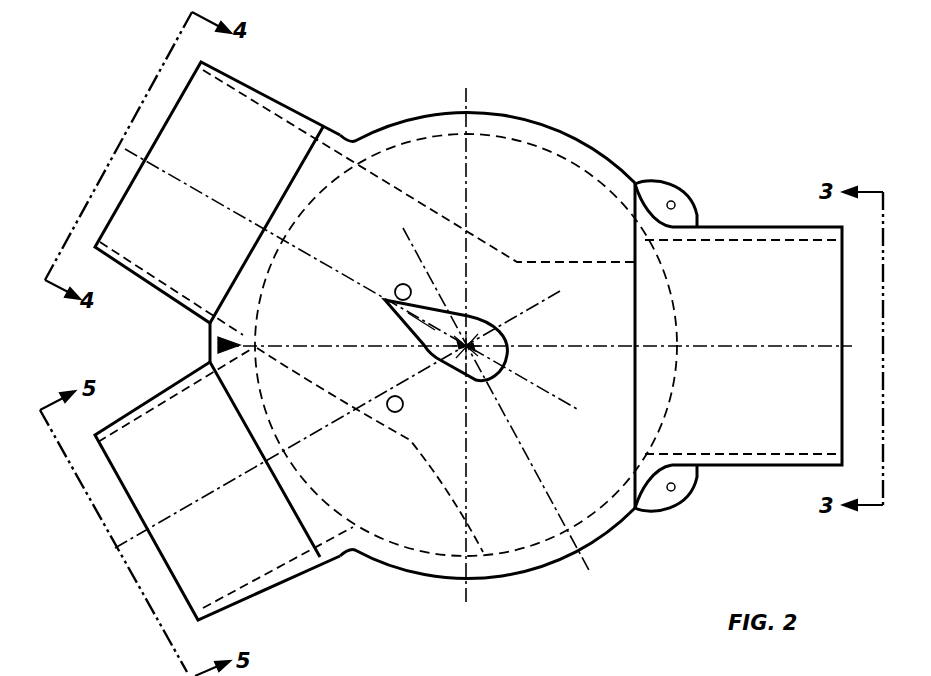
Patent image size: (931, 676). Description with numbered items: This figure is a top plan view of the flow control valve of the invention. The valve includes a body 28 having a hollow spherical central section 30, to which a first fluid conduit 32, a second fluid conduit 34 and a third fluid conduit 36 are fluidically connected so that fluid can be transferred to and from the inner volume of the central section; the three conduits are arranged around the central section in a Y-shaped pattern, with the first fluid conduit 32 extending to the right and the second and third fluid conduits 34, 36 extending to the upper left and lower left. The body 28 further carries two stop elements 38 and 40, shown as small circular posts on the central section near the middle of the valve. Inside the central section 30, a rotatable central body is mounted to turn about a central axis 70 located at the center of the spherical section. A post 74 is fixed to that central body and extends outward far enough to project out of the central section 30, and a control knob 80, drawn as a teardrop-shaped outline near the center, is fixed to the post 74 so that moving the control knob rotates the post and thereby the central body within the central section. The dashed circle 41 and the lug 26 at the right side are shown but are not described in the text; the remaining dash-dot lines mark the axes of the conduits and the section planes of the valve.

The valve housing 26 is at (647, 155).
The body 28 is at (558, 575).
The hollow spherical central section 30 is at (525, 562).
The first fluid conduit 32 is at (767, 457).
The second fluid conduit 34 is at (190, 300).
The third fluid conduit 36 is at (250, 565).
The stop element 38 is at (403, 409).
The stop element 40 is at (403, 284).
The valve chamber 41 is at (509, 127).
The central axis 70 is at (460, 346).
The post 74 is at (475, 350).
The control knob 80 is at (454, 300).